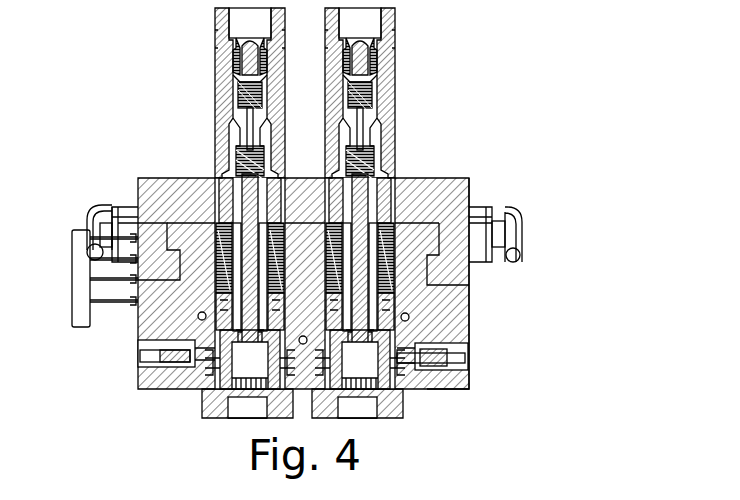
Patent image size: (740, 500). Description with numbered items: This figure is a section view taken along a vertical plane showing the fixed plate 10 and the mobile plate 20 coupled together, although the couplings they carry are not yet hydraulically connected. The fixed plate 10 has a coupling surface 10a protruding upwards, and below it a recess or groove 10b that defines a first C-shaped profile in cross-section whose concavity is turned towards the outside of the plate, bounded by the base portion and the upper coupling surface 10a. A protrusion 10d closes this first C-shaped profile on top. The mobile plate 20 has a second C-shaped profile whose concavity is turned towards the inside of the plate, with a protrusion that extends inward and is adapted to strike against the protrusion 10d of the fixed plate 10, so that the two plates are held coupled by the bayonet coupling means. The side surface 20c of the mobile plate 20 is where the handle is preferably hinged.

The fixed plate 10 is at (411, 266).
The coupling surface 10a is at (193, 223).
The recess or groove 10b is at (430, 272).
The protrusion 10d is at (168, 258).
The mobile plate 20 is at (453, 248).
The side surface 20c is at (452, 323).